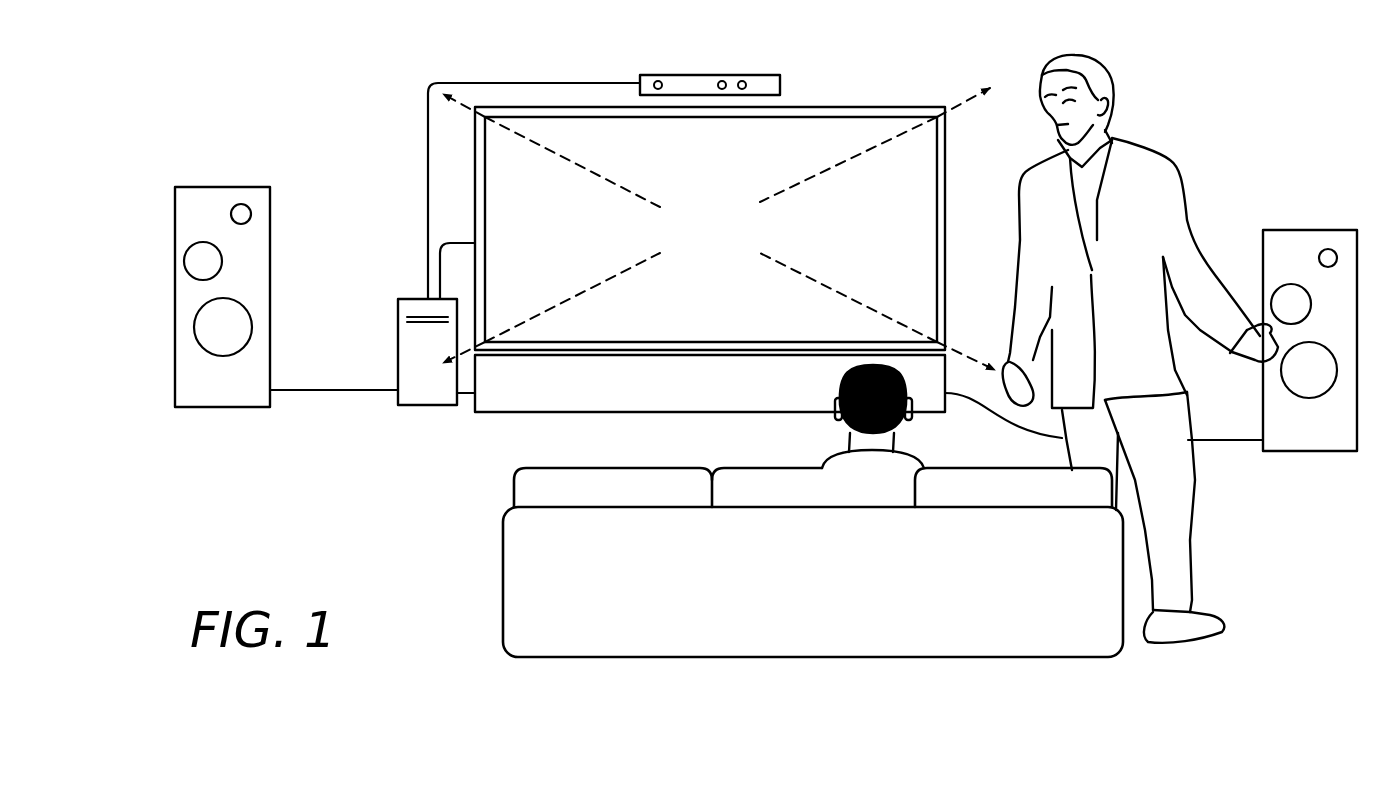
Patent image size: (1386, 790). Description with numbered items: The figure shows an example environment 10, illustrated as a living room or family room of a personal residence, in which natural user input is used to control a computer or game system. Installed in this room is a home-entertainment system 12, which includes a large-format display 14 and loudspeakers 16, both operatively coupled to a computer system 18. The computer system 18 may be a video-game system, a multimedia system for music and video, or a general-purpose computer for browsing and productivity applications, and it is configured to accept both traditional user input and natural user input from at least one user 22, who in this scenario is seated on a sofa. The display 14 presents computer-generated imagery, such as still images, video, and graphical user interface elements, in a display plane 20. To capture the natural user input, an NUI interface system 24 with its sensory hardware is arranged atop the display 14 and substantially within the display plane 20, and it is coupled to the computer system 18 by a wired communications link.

The environment 10 is at (172, 512).
The home-entertainment system 12 is at (322, 126).
The large-format display 14 is at (722, 241).
The loudspeakers 16 is at (207, 400).
The computer system 18 is at (439, 400).
The display plane 20 is at (973, 92).
The user 22 is at (820, 381).
The NUI interface system 24 is at (703, 74).